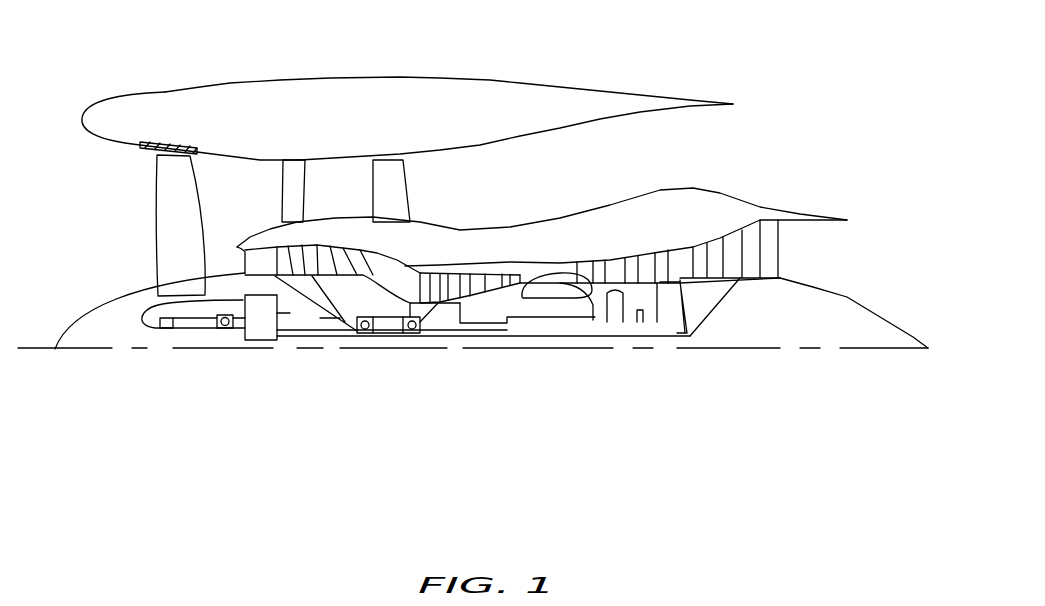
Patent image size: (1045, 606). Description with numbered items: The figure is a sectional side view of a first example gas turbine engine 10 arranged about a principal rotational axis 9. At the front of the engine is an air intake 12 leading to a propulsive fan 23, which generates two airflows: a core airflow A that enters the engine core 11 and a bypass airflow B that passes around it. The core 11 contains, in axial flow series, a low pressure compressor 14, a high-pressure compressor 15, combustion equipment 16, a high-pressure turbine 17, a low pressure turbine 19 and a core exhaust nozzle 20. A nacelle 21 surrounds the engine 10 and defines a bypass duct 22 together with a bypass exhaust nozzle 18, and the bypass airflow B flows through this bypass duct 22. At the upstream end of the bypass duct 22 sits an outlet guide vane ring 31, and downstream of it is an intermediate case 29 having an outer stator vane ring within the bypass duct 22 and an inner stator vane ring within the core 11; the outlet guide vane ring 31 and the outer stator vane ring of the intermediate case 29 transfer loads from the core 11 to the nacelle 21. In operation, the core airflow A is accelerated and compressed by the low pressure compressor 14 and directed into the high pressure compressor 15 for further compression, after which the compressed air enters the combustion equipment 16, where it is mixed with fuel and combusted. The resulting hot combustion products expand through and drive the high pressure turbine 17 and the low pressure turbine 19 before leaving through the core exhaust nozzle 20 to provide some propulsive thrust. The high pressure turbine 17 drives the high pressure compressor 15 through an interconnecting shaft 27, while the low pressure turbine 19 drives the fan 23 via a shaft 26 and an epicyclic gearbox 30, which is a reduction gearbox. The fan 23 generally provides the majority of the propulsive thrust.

The principal rotational axis 9 is at (634, 349).
The gas turbine engine 10 is at (160, 93).
The core 11 is at (520, 243).
The air intake 12 is at (104, 172).
The low pressure compressor 14 is at (330, 253).
The high-pressure compressor 15 is at (475, 283).
The combustion equipment 16 is at (550, 286).
The high-pressure turbine 17 is at (613, 262).
The bypass exhaust nozzle 18 is at (735, 144).
The low pressure turbine 19 is at (752, 237).
The core exhaust nozzle 20 is at (823, 248).
The nacelle 21 is at (387, 92).
The bypass duct 22 is at (677, 160).
The propulsive fan 23 is at (160, 226).
The shaft 26 is at (468, 337).
The interconnecting shaft 27 is at (509, 324).
The intermediate case 29 is at (395, 218).
The epicyclic gearbox 30 is at (257, 330).
The outlet guide vane ring 31 is at (300, 176).
The core airflow A is at (230, 262).
The bypass airflow B is at (230, 196).